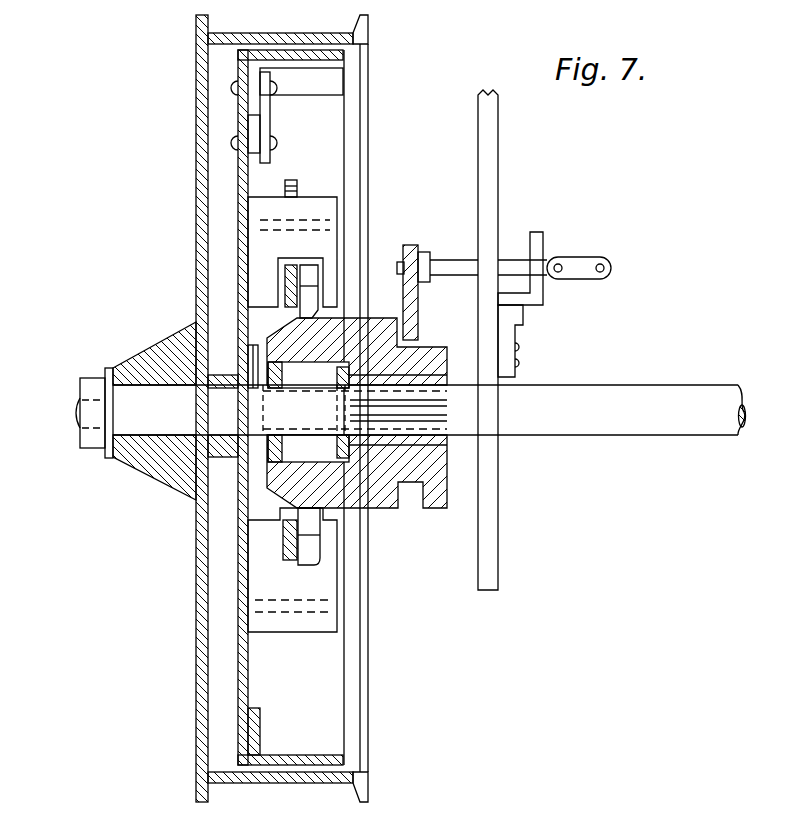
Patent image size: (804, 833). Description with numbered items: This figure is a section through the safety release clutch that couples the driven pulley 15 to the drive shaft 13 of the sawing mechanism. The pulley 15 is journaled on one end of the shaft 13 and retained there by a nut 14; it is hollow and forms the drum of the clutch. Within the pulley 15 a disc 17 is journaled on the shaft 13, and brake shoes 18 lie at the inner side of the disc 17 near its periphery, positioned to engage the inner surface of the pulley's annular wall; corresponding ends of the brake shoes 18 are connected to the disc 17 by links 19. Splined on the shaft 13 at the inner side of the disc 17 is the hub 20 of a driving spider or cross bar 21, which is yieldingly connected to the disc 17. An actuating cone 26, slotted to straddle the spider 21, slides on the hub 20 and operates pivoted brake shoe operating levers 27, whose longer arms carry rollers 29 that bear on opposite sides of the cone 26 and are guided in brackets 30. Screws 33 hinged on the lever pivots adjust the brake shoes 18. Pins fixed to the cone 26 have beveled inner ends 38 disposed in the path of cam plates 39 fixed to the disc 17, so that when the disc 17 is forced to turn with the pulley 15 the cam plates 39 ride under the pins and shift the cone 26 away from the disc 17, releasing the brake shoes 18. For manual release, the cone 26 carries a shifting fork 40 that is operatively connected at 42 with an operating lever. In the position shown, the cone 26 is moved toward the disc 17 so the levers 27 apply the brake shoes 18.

The shaft 13 is at (652, 396).
The nut 14 is at (86, 452).
The pulley 15 is at (196, 624).
The disc 17 is at (240, 541).
The brake shoes 18 is at (322, 79).
The links 19 is at (272, 126).
The hub 20 is at (388, 443).
The spider 21 is at (248, 452).
The actuating cone 26 is at (348, 327).
The brake shoe operating levers 27 is at (283, 556).
The rollers 29 is at (300, 557).
The brackets 30 is at (322, 249).
The screws 33 is at (294, 184).
The beveled inner ends 38 is at (262, 411).
The cam plates 39 is at (240, 340).
The shifting fork 40 is at (421, 284).
The connection 42 is at (582, 262).